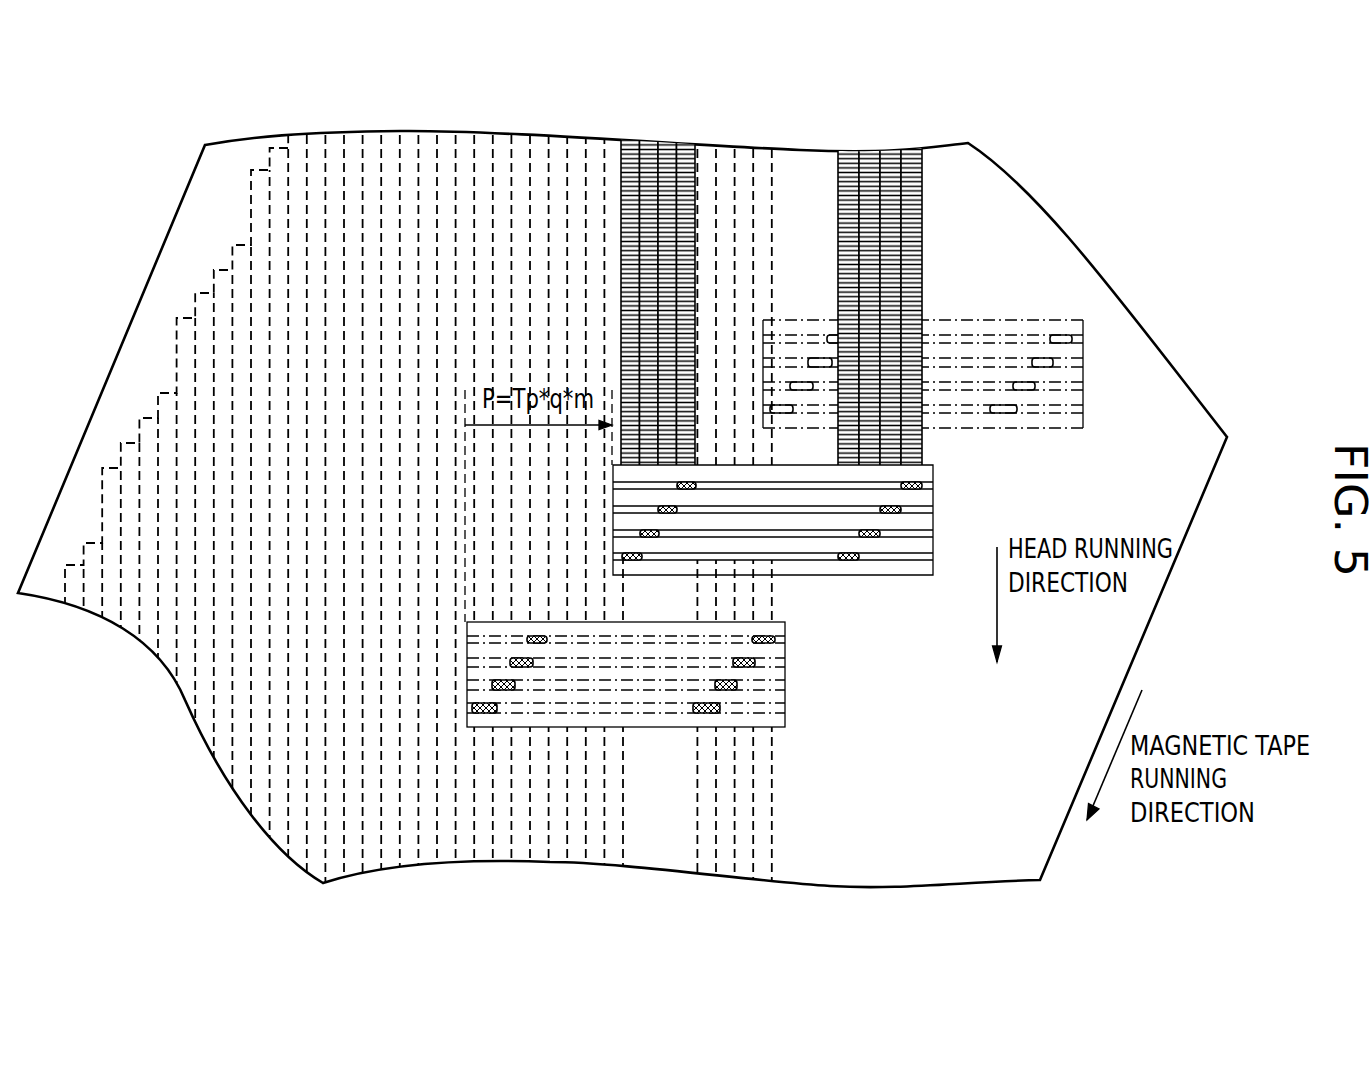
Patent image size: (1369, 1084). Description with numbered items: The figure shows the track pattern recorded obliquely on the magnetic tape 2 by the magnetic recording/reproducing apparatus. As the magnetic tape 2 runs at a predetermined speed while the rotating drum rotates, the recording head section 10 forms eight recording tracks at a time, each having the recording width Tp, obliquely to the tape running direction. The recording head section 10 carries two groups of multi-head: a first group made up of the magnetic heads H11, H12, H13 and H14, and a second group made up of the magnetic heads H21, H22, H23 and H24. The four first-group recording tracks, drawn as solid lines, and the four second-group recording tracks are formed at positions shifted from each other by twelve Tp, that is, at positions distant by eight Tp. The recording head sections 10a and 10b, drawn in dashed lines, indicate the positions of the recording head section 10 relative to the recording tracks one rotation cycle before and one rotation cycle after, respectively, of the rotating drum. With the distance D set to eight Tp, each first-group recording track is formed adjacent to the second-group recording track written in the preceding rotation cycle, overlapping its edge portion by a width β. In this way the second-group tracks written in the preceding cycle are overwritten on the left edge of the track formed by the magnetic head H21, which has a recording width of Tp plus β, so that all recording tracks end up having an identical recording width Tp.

The magnetic tape 2 is at (1058, 210).
The recording head section 10 is at (933, 525).
The recording head section (preceding cycle position) 10a is at (787, 695).
The recording head section (following cycle position) 10b is at (1085, 408).
The magnetic head H11 is at (627, 555).
The magnetic head H12 is at (650, 528).
The magnetic head H13 is at (666, 514).
The magnetic head H14 is at (688, 490).
The magnetic head H21 is at (852, 561).
The magnetic head H22 is at (873, 538).
The magnetic head H23 is at (893, 514).
The magnetic head H24 is at (914, 489).